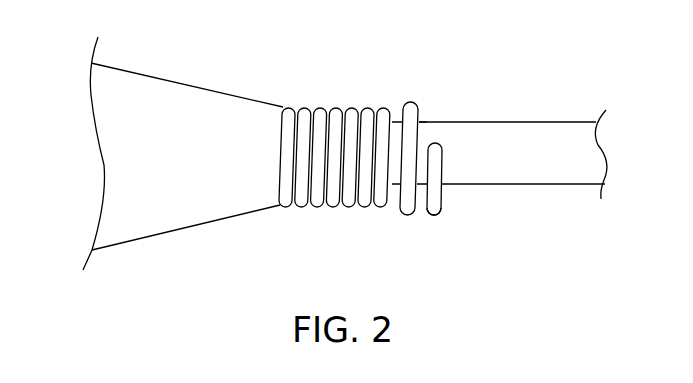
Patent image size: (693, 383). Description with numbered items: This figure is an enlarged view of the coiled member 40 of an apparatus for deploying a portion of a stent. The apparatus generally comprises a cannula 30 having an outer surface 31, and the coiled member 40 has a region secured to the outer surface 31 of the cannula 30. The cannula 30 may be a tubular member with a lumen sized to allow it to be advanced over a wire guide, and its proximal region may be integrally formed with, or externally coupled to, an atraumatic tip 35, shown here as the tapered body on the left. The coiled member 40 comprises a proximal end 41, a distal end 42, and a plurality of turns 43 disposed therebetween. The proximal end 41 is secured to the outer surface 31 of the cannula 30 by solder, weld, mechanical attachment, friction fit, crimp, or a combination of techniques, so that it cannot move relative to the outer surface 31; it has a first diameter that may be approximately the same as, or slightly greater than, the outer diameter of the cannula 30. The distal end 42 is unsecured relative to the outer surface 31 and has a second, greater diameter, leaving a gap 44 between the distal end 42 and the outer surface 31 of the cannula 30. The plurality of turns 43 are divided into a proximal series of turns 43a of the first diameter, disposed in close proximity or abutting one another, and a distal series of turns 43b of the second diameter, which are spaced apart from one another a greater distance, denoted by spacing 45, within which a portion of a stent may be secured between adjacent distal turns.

The cannula 30 is at (562, 172).
The outer surface 31 is at (555, 122).
The atraumatic tip 35 is at (152, 103).
The coiled member 40 is at (367, 151).
The proximal end 41 is at (285, 207).
The distal end 42 is at (445, 155).
The plurality of turns 43 is at (303, 110).
The proximal series of turns 43a is at (382, 202).
The distal series of turns 43b is at (400, 217).
The gap 44 is at (447, 201).
The spacing 45 is at (422, 157).